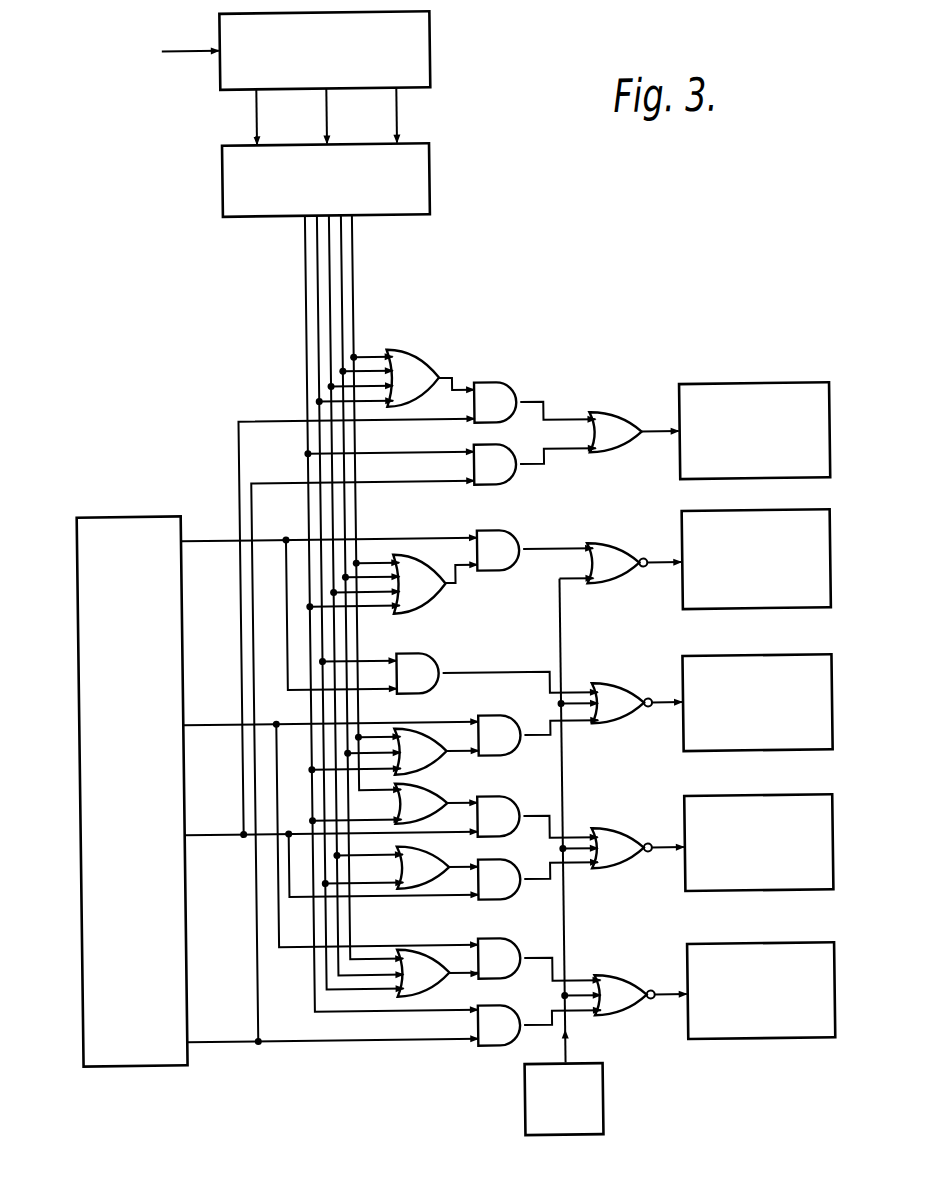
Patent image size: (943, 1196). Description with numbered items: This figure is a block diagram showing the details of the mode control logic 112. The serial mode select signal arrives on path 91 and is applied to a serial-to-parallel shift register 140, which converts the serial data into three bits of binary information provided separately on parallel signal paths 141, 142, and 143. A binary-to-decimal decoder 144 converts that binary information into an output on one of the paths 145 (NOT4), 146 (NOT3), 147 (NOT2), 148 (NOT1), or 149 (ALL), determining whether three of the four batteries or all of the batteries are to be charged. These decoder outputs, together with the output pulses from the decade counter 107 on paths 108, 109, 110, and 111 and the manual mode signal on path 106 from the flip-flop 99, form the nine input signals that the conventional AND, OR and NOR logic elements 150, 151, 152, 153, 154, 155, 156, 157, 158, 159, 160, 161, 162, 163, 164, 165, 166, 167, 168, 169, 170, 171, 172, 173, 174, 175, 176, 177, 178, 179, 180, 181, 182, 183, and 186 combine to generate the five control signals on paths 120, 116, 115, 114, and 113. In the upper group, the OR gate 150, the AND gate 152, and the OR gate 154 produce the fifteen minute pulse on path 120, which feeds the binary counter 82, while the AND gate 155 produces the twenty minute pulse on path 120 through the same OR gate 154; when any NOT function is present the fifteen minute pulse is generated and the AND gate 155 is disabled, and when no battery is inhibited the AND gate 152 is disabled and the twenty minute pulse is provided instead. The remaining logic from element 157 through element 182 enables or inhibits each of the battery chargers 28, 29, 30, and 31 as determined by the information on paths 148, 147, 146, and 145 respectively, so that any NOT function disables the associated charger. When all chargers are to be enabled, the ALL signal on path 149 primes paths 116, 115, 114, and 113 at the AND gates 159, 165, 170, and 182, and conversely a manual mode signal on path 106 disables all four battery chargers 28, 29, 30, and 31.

The path 91 is at (214, 44).
The serial-to-parallel shift register 140 is at (438, 52).
The parallel signal path 141 is at (262, 120).
The parallel signal path 142 is at (332, 120).
The parallel signal path 143 is at (402, 120).
The binary-to-decimal decoder 144 is at (436, 186).
The path (NOT4) 145 is at (358, 266).
The path (NOT3) 146 is at (347, 297).
The path (NOT2) 147 is at (335, 258).
The path (NOT1) 148 is at (323, 290).
The path (ALL) 149 is at (311, 318).
The OR gate 150 is at (416, 349).
The logic element 151 is at (459, 378).
The AND gate 152 is at (502, 383).
The logic element 153 is at (549, 403).
The OR gate 154 is at (618, 418).
The AND gate 155 is at (502, 485).
The logic element 156 is at (549, 464).
The logic element 157 is at (412, 612).
The logic element 158 is at (457, 575).
The AND gate 159 is at (494, 531).
The logic element 160 is at (531, 532).
The logic element 161 is at (616, 545).
The logic element 162 is at (441, 652).
The logic element 163 is at (490, 673).
The logic element 164 is at (598, 685).
The AND gate 165 is at (536, 703).
The logic element 166 is at (568, 722).
The logic element 167 is at (412, 728).
The logic element 168 is at (434, 780).
The logic element 169 is at (462, 803).
The AND gate 170 is at (516, 797).
The logic element 171 is at (572, 838).
The logic element 172 is at (620, 831).
The logic element 173 is at (406, 889).
The logic element 174 is at (456, 870).
The logic element 175 is at (490, 900).
The logic element 176 is at (572, 865).
The logic element 177 is at (407, 997).
The logic element 178 is at (456, 975).
The logic element 179 is at (499, 939).
The logic element 180 is at (574, 982).
The logic element 181 is at (626, 975).
The AND gate 182 is at (498, 1046).
The AND gate output line 183 is at (576, 1012).
The AND gate 186 is at (443, 750).
The binary counter 82 is at (745, 388).
The battery charger 28 is at (684, 532).
The battery charger 29 is at (746, 660).
The battery charger 30 is at (745, 800).
The battery charger 31 is at (746, 948).
The path 120 is at (664, 438).
The path 116 is at (661, 568).
The path 115 is at (663, 708).
The path 114 is at (662, 853).
The path 113 is at (654, 960).
The path 106 is at (561, 1055).
The flip-flop 99 is at (598, 1100).
The decade counter 107 is at (130, 513).
The path 108 is at (200, 538).
The path 109 is at (202, 708).
The path 110 is at (207, 818).
The path 111 is at (220, 1023).
The mode control logic 112 is at (571, 267).